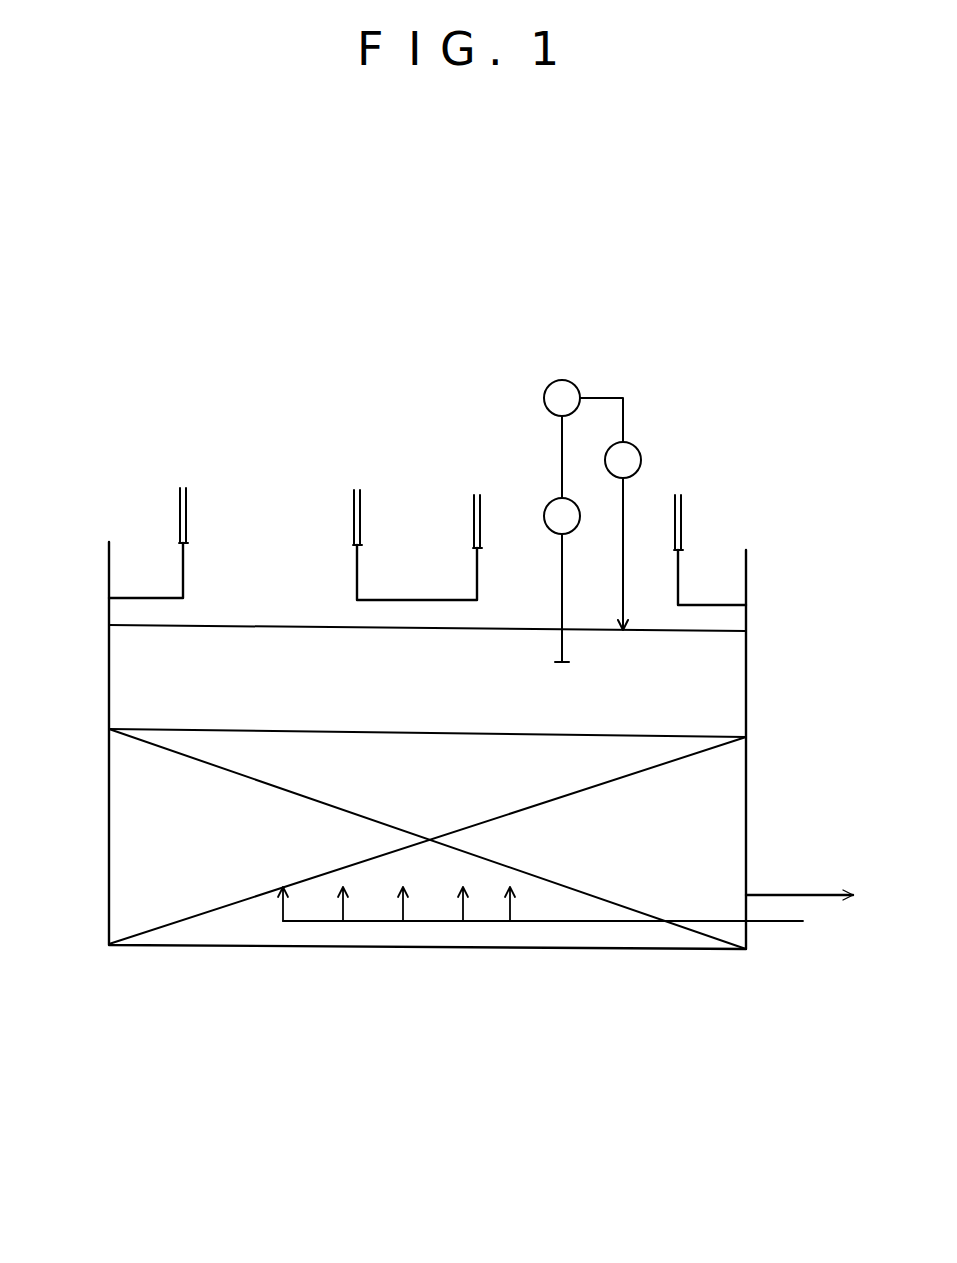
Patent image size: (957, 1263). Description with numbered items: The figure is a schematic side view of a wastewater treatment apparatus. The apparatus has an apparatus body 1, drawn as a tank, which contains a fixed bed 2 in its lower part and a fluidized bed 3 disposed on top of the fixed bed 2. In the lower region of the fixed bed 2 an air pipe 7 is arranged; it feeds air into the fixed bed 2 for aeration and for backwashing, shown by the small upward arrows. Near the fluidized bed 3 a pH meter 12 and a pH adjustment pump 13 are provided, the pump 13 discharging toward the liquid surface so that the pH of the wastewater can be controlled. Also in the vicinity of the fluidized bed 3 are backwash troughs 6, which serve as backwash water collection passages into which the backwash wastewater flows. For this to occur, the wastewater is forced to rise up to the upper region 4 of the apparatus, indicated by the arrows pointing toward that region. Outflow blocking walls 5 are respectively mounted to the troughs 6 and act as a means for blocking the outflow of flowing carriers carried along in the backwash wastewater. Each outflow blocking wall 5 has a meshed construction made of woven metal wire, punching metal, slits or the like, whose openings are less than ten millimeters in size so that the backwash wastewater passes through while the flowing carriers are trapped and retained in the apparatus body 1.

The apparatus body 1 is at (772, 748).
The fixed bed 2 is at (708, 845).
The fluidized bed 3 is at (132, 687).
The upper region 4 is at (278, 540).
The outflow blocking wall 5 is at (187, 514).
The backwash trough 6 is at (147, 548).
The air pipe 7 is at (563, 921).
The pH meter 12 is at (550, 498).
The pH adjustment pump 13 is at (641, 460).